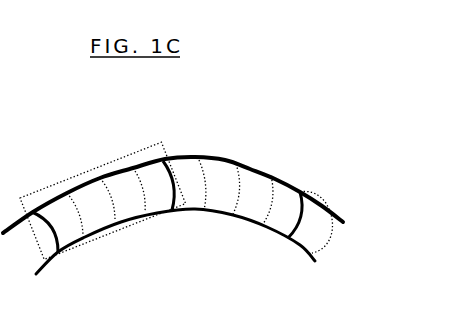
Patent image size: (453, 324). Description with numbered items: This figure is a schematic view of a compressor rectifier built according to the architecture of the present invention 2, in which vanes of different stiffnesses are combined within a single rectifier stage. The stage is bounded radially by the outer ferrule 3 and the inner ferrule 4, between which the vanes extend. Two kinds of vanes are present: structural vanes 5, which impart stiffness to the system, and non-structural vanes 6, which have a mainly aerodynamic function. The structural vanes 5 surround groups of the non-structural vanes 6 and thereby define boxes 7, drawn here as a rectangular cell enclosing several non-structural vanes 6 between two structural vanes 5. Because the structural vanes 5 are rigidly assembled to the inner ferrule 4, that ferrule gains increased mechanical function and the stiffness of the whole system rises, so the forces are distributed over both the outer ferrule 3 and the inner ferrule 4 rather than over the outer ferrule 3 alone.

The architecture as in the present invention 2 is at (224, 134).
The outer ferrule 3 is at (267, 173).
The inner ferrule 4 is at (178, 212).
The structural vanes 5 is at (298, 225).
The non-structural vanes 6 is at (203, 212).
The boxes 7 is at (90, 173).